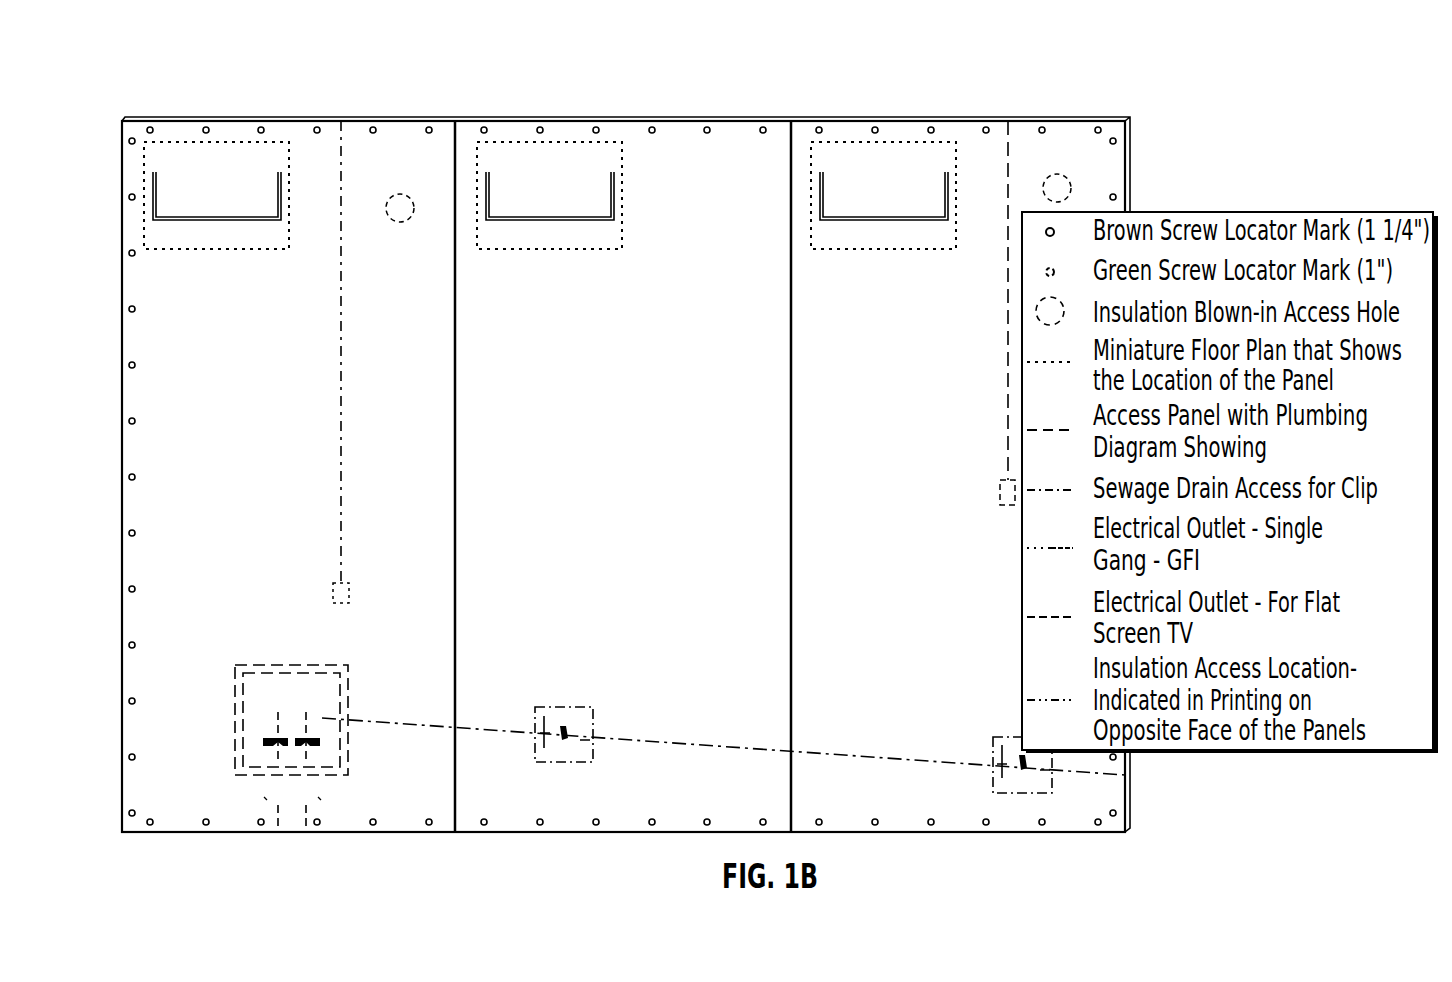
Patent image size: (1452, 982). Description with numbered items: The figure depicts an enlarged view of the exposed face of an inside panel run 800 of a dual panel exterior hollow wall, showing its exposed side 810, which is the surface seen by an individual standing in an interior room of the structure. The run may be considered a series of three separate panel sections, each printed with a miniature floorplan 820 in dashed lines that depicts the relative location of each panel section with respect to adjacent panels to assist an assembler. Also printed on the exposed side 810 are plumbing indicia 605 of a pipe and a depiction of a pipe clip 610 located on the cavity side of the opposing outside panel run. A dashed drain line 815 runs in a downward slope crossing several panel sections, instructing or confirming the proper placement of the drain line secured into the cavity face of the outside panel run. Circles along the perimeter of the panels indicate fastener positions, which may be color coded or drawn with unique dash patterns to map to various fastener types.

The inside panel run 800 is at (163, 68).
The exposed side of inside panel run 810 is at (253, 418).
The floorplan 820 is at (218, 242).
The pipe clip 610 is at (263, 742).
The plumbing indicia 605 is at (277, 818).
The dashed drain line 815 is at (420, 715).